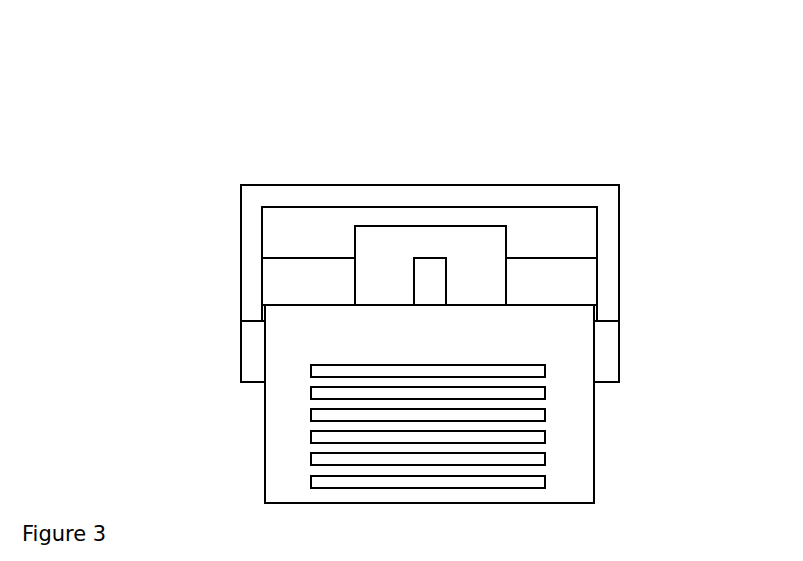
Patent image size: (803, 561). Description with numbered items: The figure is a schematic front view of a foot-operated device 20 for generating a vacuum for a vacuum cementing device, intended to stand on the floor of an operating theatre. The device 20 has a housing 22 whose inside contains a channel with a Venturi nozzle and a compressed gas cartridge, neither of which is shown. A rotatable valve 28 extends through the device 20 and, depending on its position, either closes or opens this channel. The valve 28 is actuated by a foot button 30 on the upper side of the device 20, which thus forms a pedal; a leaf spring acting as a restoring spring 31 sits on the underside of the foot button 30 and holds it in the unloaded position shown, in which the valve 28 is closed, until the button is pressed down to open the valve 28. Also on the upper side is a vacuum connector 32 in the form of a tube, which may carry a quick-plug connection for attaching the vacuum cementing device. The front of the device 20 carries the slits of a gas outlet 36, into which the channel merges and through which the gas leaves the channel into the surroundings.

The device 20 is at (140, 85).
The housing 22 is at (483, 322).
The rotatable valve 28 is at (237, 344).
The foot button 30 is at (428, 187).
The restoring spring 31 is at (472, 243).
The vacuum connector 32 is at (422, 275).
The gas outlet 36 is at (345, 439).